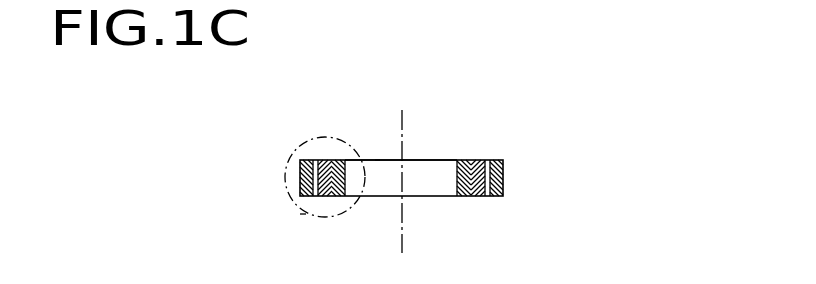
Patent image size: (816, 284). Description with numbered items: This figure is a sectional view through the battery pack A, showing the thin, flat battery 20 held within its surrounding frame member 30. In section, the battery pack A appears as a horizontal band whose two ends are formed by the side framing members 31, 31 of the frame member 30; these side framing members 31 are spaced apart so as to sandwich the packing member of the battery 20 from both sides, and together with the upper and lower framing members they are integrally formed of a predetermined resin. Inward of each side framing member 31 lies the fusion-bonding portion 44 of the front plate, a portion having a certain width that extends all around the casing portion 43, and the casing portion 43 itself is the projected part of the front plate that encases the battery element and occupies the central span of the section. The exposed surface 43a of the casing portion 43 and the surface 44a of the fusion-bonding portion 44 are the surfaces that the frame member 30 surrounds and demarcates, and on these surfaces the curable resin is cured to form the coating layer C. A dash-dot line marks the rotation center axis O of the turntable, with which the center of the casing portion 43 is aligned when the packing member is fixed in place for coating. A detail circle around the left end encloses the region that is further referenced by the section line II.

The nonaqueous electrolyte secondary battery 20 is at (338, 160).
The frame member 30 is at (503, 196).
The side framing member 31 is at (297, 182).
The casing portion 43 is at (467, 160).
The surface of the casing portion 43a is at (430, 160).
The fusion-bonding portion 44 is at (325, 198).
The surface of the fusion-bonding portion 44a is at (477, 197).
The battery pack A is at (289, 155).
The coating layer C is at (377, 160).
The rotation center axis O is at (402, 113).
The section line II is at (303, 215).